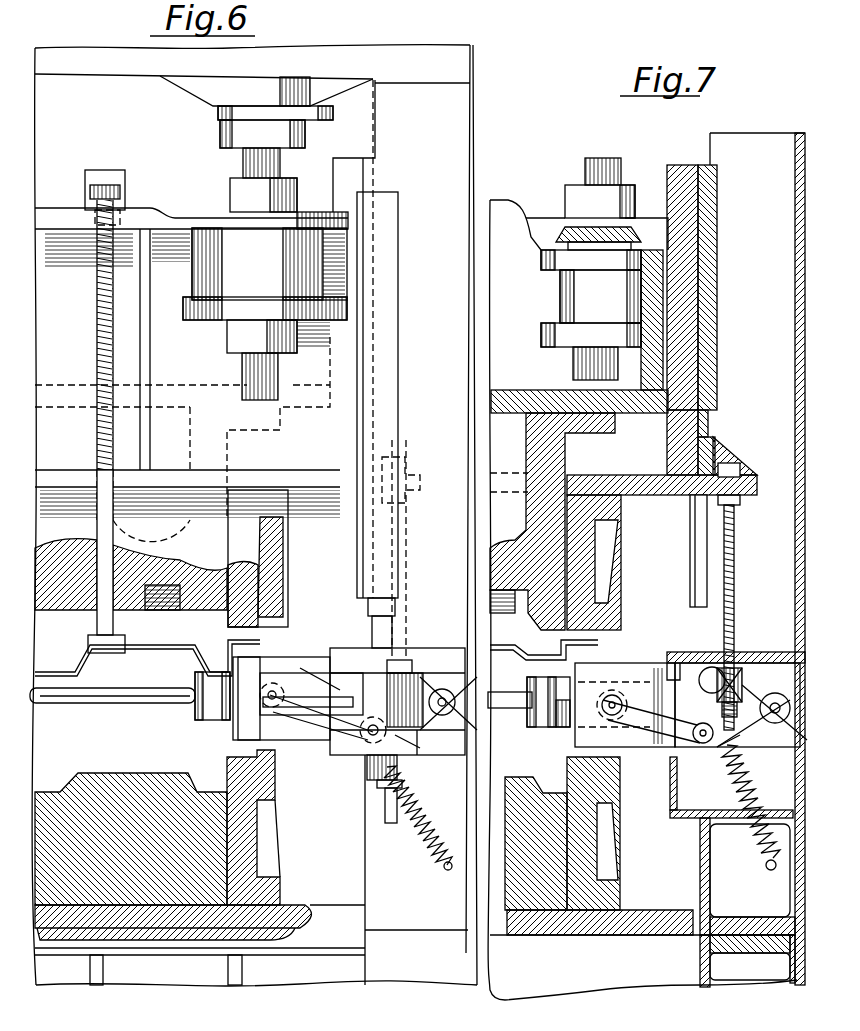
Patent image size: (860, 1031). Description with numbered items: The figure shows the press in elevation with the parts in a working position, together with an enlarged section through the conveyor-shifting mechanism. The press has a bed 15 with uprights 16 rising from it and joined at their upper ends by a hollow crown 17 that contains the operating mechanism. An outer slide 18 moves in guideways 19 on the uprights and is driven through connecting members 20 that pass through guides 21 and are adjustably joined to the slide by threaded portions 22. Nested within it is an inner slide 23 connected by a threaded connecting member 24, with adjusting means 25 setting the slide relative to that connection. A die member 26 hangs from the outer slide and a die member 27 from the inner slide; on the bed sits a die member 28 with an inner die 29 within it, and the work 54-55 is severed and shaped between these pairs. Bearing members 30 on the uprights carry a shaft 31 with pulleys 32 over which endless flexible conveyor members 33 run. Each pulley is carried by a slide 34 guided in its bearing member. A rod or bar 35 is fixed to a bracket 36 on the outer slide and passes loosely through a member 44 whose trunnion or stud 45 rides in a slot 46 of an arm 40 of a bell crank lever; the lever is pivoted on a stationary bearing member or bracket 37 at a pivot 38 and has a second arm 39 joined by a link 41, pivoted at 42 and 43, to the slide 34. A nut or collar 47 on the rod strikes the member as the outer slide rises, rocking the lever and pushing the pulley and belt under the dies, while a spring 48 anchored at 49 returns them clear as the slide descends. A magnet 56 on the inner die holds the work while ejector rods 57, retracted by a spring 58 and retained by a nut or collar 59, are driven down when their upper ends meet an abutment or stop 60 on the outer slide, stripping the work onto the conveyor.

In FIG. 6, the bed 15 is at (328, 948).
In FIG. 7, the bed 15 is at (637, 978).
In FIG. 6, the uprights 16 is at (474, 105).
In FIG. 7, the uprights 16 is at (801, 133).
In FIG. 6, the crown 17 is at (471, 66).
In FIG. 6, the outer slide 18 is at (207, 217).
In FIG. 7, the outer slide 18 is at (644, 215).
In FIG. 6, the guideways 19 is at (400, 198).
In FIG. 7, the guideways 19 is at (695, 600).
In FIG. 6, the connecting members 20 is at (292, 160).
In FIG. 6, the guides 21 is at (308, 80).
In FIG. 6, the threaded portions 22 is at (282, 170).
In FIG. 7, the threaded portions 22 is at (586, 170).
In FIG. 6, the inner slide 23 is at (183, 385).
In FIG. 7, the inner slide 23 is at (516, 400).
In FIG. 7, the connecting member 24 is at (576, 217).
In FIG. 7, the adjusting means 25 is at (571, 240).
In FIG. 6, the die member 26 is at (270, 573).
In FIG. 7, the die member 26 is at (588, 507).
In FIG. 6, the die member 27 is at (190, 524).
In FIG. 7, the die member 27 is at (528, 448).
In FIG. 6, the die member 28 is at (270, 820).
In FIG. 7, the die member 28 is at (605, 856).
In FIG. 6, the inner die 29 is at (126, 790).
In FIG. 7, the inner die 29 is at (548, 793).
In FIG. 6, the bearing members 30 is at (410, 670).
In FIG. 6, the shaft 31 is at (90, 700).
In FIG. 7, the shaft 31 is at (508, 700).
In FIG. 6, the pulleys 32 is at (201, 718).
In FIG. 7, the pulleys 32 is at (535, 725).
In FIG. 6, the endless flexible conveyor members 33 is at (217, 720).
In FIG. 7, the endless flexible conveyor members 33 is at (557, 727).
In FIG. 7, the slide 34 is at (625, 745).
In FIG. 6, the rod or bar 35 is at (402, 606).
In FIG. 7, the rod or bar 35 is at (737, 552).
In FIG. 6, the bracket 36 is at (416, 485).
In FIG. 7, the bracket 36 is at (750, 470).
In FIG. 6, the bearing member or bracket 37 is at (460, 722).
In FIG. 7, the bearing member or bracket 37 is at (783, 740).
In FIG. 6, the pivot 38 is at (455, 699).
In FIG. 7, the pivot 38 is at (773, 722).
In FIG. 6, the arm 39 is at (300, 668).
In FIG. 7, the arm 39 is at (736, 730).
In FIG. 6, the arm 40 is at (425, 672).
In FIG. 7, the arm 40 is at (753, 680).
In FIG. 6, the link 41 is at (323, 722).
In FIG. 7, the link 41 is at (653, 722).
In FIG. 6, the pivot 42 is at (363, 742).
In FIG. 7, the pivot 42 is at (702, 745).
In FIG. 6, the pivot 43 is at (275, 691).
In FIG. 7, the pivot 43 is at (614, 695).
In FIG. 6, the member 44 is at (405, 673).
In FIG. 7, the member 44 is at (735, 668).
In FIG. 6, the trunnion or stud 45 is at (365, 677).
In FIG. 7, the trunnion or stud 45 is at (703, 652).
In FIG. 6, the slot 46 is at (417, 668).
In FIG. 7, the slot 46 is at (700, 685).
In FIG. 6, the nut or collar 47 is at (377, 792).
In FIG. 7, the nut or collar 47 is at (720, 699).
In FIG. 6, the spring 48 is at (430, 840).
In FIG. 7, the spring 48 is at (762, 846).
In FIG. 6, the anchor 49 is at (445, 866).
In FIG. 7, the anchor 49 is at (773, 871).
In FIG. 6, the work 54-55 is at (50, 672).
In FIG. 7, the work 54-55 is at (533, 656).
In FIG. 6, the magnet 56 is at (158, 612).
In FIG. 7, the magnet 56 is at (515, 613).
In FIG. 6, the ejector rods 57 is at (100, 533).
In FIG. 6, the spring 58 is at (97, 290).
In FIG. 6, the nut or collar 59 is at (130, 190).
In FIG. 6, the abutment or stop 60 is at (120, 180).